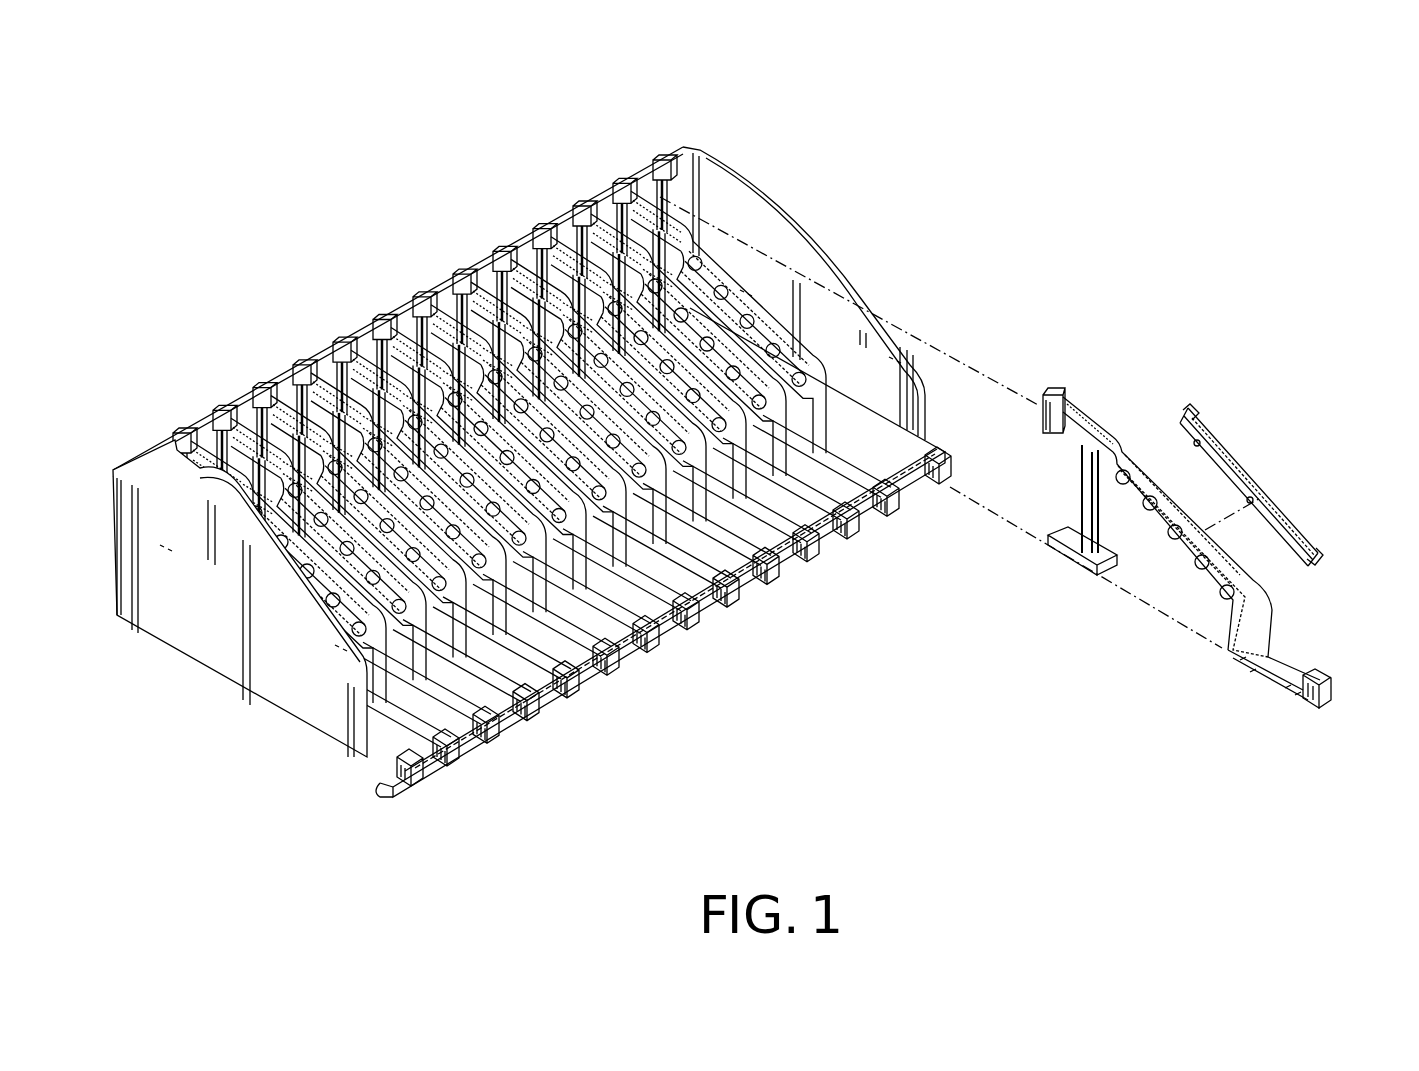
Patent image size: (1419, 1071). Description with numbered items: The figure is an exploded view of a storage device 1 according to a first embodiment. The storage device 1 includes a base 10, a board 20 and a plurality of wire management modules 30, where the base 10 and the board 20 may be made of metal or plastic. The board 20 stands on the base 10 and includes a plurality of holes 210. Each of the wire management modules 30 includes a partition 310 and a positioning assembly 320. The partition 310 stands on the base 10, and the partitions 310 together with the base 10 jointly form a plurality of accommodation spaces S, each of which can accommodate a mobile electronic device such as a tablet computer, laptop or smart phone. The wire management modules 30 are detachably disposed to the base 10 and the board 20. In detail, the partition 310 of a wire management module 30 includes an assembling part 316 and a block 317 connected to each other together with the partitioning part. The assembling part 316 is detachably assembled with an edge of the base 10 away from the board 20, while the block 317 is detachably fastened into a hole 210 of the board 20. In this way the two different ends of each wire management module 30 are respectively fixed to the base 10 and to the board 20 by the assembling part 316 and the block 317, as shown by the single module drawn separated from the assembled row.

The storage device 1 is at (127, 308).
The base 10 is at (930, 443).
The board 20 is at (519, 434).
The holes 210 is at (650, 178).
The wire management modules 30 is at (655, 652).
The partition 310 is at (1118, 405).
The assembling part 316 is at (1328, 682).
The block 317 is at (1043, 396).
The positioning assembly 320 is at (1240, 428).
The accommodation spaces S is at (660, 545).